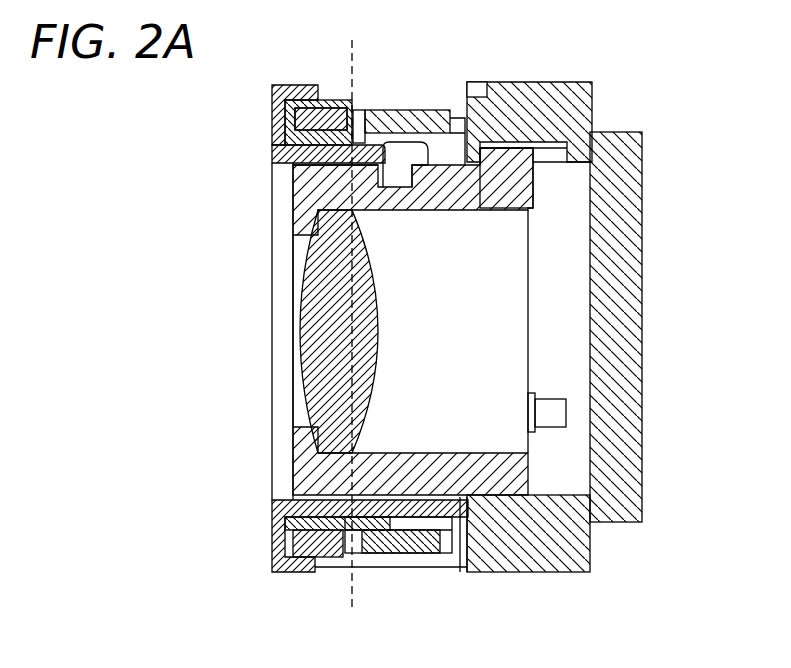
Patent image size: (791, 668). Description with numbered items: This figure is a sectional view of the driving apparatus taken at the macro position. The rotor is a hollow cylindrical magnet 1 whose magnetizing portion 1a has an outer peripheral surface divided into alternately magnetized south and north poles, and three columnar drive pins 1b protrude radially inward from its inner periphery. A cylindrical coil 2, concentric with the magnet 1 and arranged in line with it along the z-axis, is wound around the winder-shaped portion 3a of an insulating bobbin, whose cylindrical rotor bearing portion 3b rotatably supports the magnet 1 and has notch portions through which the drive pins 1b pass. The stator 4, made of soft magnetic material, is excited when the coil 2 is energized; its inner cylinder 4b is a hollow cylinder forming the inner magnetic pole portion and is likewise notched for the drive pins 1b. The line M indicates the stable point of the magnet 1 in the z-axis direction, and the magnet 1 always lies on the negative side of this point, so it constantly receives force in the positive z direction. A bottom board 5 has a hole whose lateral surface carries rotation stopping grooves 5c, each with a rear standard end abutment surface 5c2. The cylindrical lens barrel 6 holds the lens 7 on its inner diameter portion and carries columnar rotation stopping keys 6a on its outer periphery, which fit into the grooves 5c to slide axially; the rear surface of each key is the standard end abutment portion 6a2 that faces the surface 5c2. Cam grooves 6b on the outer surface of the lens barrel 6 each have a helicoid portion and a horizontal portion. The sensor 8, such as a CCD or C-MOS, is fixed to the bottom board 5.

The magnet 1 is at (421, 110).
The magnetizing portion 1a is at (430, 540).
The drive pins 1b is at (398, 157).
The coil 2 is at (327, 100).
The winder-shaped portion 3a is at (290, 517).
The rotor bearing portion 3b is at (377, 530).
The stator 4 is at (272, 128).
The inner cylinder 4b is at (282, 153).
The bottom board 5 is at (540, 547).
The rotation stopping grooves 5c is at (565, 172).
The standard end abutment surface 5c2 is at (560, 170).
The lens barrel 6 is at (318, 468).
The rotation stopping keys 6a is at (500, 157).
The standard end abutment portion 6a2 is at (507, 217).
The cam grooves 6b is at (340, 178).
The lens 7 is at (318, 276).
The sensor 8 is at (615, 495).
The stable point line M is at (352, 328).